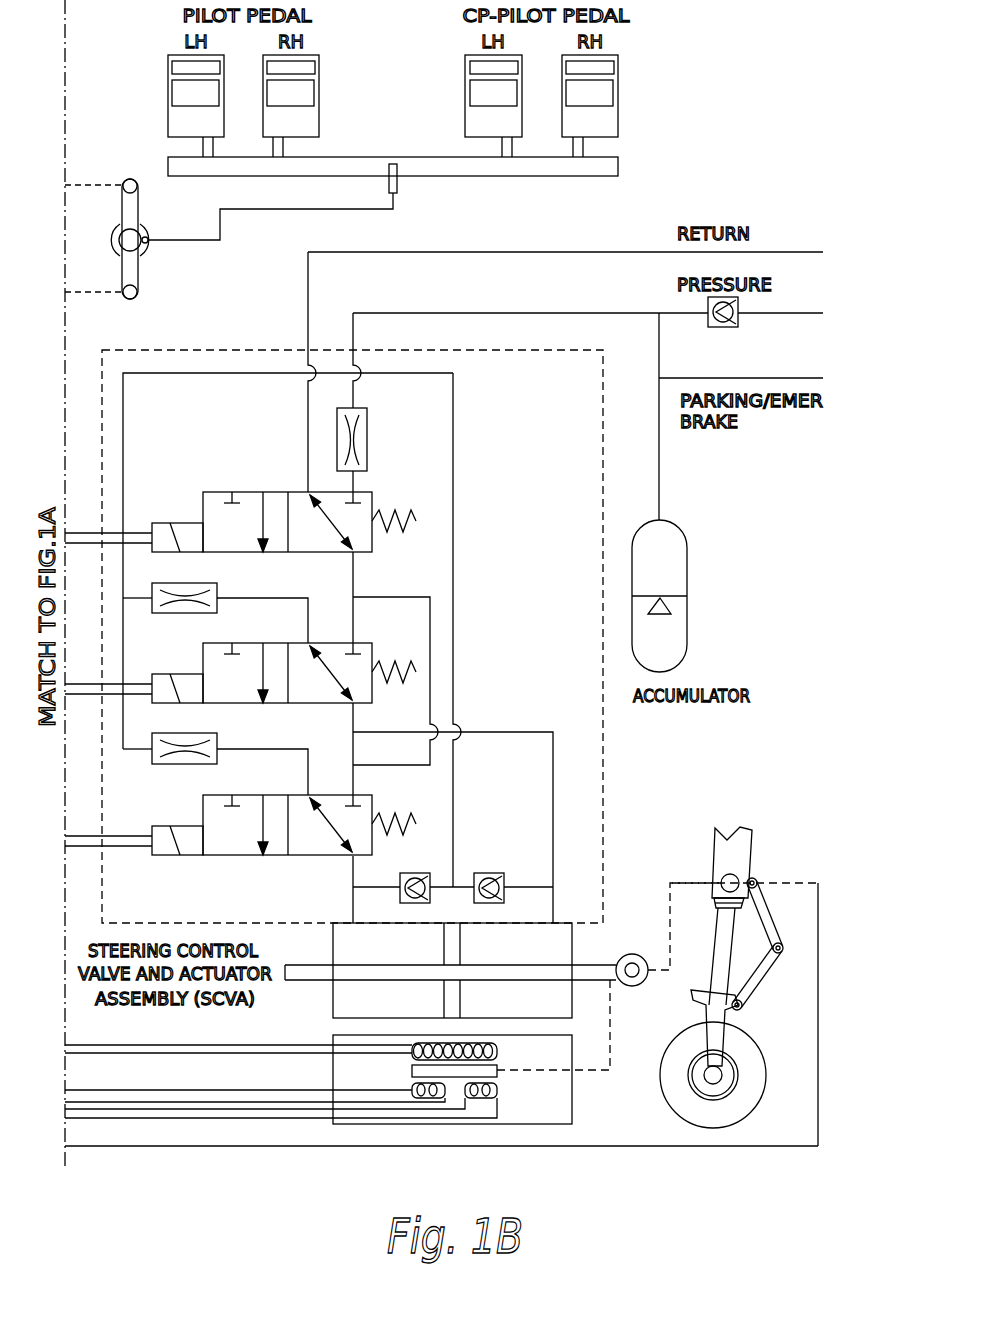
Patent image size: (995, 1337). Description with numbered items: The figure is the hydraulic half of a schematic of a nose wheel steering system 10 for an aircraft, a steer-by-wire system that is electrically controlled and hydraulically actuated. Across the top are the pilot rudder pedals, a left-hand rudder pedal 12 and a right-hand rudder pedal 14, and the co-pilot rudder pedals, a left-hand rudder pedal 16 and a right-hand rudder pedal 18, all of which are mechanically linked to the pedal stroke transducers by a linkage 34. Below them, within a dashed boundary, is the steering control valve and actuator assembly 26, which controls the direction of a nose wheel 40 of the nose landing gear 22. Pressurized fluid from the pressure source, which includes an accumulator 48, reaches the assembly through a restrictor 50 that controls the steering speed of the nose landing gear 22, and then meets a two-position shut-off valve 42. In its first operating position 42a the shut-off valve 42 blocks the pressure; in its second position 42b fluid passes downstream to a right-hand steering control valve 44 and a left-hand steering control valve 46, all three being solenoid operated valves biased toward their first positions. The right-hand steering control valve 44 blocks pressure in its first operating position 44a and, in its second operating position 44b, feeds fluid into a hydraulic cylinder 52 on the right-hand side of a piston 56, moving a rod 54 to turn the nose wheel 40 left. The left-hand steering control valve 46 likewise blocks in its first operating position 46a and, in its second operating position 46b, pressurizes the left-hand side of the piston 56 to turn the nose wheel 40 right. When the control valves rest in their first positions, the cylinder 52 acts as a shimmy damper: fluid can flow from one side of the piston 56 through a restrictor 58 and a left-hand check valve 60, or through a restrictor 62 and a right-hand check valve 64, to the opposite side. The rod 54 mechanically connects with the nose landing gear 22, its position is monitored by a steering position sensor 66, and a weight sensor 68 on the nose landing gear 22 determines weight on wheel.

The nose wheel steering system 10 is at (760, 52).
The left-hand rudder pedal 12 is at (168, 122).
The right-hand rudder pedal 14 is at (319, 115).
The left-hand rudder pedal 16 is at (465, 104).
The right-hand rudder pedal 18 is at (618, 117).
The nose landing gear 22 is at (776, 812).
The steering control valve and actuator assembly 26 is at (186, 905).
The linkage 34 is at (185, 262).
The nose wheel 40 is at (736, 1108).
The shut-off valve 42 is at (188, 503).
The first operating position 42a is at (362, 492).
The second position 42b is at (240, 492).
The right-hand steering control valve 44 is at (188, 654).
The first operating position 44a is at (362, 643).
The second operating position 44b is at (240, 643).
The left-hand steering control valve 46 is at (188, 806).
The first operating position 46a is at (362, 795).
The second operating position 46b is at (240, 795).
The accumulator 48 is at (687, 577).
The restrictor 50 is at (367, 443).
The hydraulic cylinder 52 is at (596, 948).
The rod 54 is at (536, 980).
The piston 56 is at (444, 950).
The restrictor 58 is at (200, 575).
The left-hand check valve 60 is at (408, 873).
The restrictor 62 is at (200, 725).
The right-hand check valve 64 is at (497, 873).
The steering position sensor 66 is at (572, 1098).
The weight sensor 68 is at (760, 872).